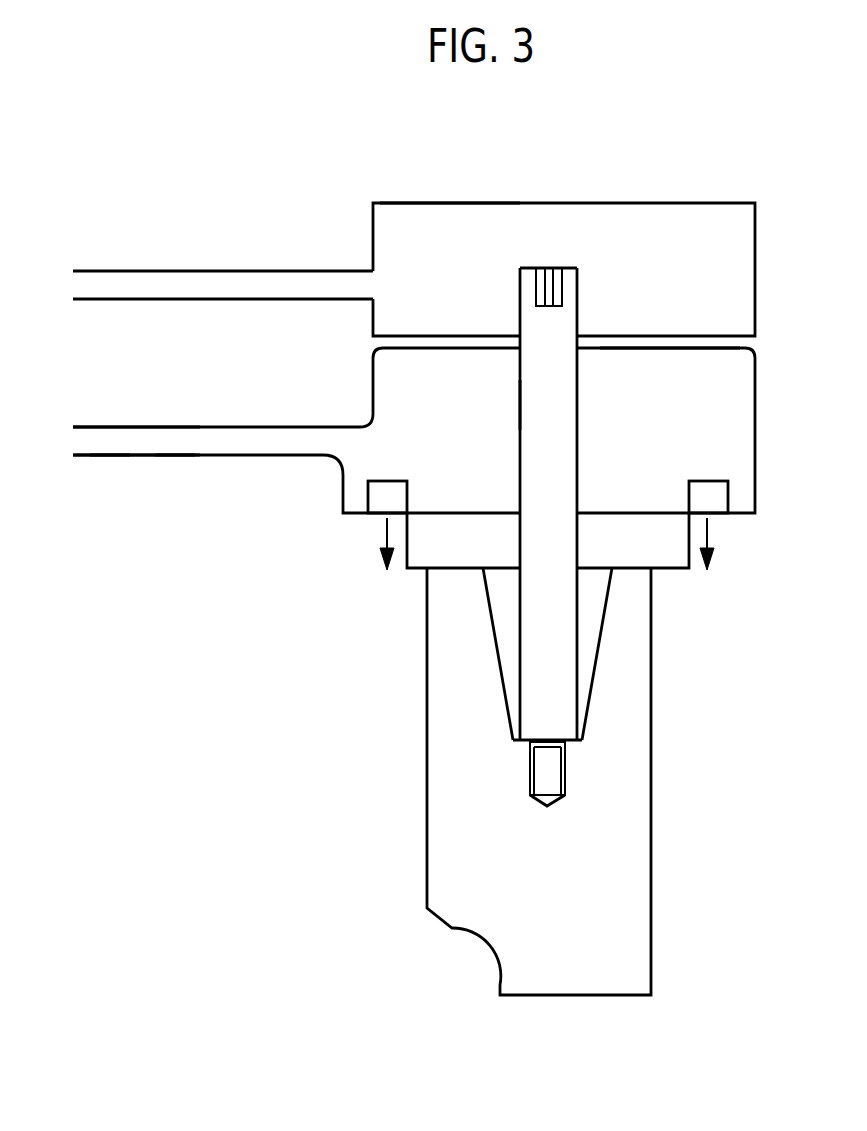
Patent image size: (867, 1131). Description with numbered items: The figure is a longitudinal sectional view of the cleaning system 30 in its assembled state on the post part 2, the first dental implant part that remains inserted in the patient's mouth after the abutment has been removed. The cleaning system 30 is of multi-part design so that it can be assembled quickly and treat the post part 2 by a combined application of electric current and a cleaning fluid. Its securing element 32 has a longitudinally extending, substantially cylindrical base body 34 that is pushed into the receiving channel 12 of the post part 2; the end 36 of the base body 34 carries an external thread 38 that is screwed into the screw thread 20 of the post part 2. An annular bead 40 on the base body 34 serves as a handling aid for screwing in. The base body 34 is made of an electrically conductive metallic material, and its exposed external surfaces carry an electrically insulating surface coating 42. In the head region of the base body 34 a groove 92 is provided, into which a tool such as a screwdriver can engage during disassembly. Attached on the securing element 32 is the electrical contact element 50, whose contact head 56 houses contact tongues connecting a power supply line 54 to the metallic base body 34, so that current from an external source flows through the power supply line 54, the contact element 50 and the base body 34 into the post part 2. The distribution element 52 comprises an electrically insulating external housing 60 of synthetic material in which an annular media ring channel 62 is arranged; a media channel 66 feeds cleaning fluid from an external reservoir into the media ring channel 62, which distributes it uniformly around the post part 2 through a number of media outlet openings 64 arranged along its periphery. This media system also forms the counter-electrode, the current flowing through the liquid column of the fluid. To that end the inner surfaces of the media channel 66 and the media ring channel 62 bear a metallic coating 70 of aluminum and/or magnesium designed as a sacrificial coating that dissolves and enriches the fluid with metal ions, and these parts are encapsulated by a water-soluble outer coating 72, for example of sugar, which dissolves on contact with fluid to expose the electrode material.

The post part 2 is at (633, 923).
The receiving channel 12 is at (510, 632).
The screw thread 20 is at (552, 787).
The cleaning system 30 is at (265, 702).
The securing element 32 is at (460, 538).
The base body 34 is at (553, 405).
The end 36 is at (570, 740).
The external thread 38 is at (550, 770).
The annular bead 40 is at (632, 538).
The electrically insulating surface coating 42 is at (520, 405).
The electrical contact element 50 is at (555, 222).
The distribution element 52 is at (735, 368).
The power supply line 54 is at (222, 283).
The contact head 56 is at (453, 222).
The external housing 60 is at (755, 428).
The media ring channel 62 is at (388, 494).
The media outlet openings 64 is at (375, 517).
The media channel 66 is at (221, 440).
The metallic coating 70 is at (108, 458).
The water-soluble outer coating 72 is at (173, 458).
The groove 92 is at (550, 288).